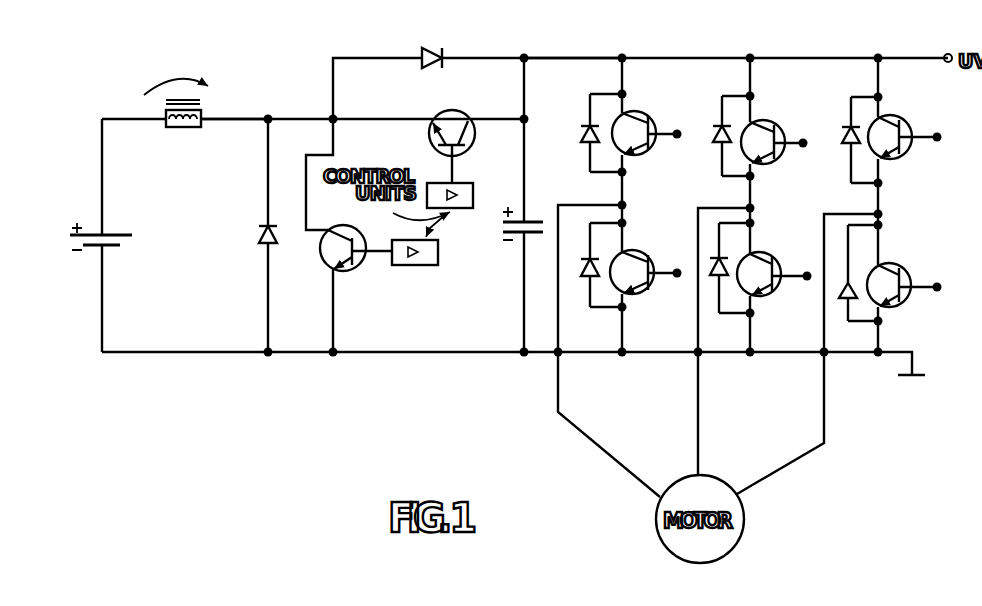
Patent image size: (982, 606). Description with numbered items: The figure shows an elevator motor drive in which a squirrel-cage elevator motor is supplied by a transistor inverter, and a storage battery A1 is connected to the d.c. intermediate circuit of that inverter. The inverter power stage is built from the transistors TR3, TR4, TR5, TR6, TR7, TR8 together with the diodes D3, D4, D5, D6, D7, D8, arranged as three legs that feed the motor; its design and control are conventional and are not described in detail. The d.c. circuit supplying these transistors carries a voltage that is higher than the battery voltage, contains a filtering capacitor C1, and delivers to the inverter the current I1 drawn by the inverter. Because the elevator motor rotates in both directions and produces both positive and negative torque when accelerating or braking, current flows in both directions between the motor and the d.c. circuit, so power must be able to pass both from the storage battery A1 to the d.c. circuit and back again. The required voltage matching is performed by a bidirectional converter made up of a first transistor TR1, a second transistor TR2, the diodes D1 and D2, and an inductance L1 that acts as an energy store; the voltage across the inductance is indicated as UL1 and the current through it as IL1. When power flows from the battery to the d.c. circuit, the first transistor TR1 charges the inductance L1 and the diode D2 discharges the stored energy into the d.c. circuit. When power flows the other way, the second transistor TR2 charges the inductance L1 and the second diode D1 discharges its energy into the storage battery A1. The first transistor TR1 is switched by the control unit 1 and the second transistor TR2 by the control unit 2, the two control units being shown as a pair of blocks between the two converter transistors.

The inductance L1 is at (183, 128).
The inductor voltage UL1 is at (176, 72).
The inductor current IL1 is at (234, 102).
The storage battery A1 is at (86, 235).
The second diode D1 is at (251, 235).
The diode D2 is at (427, 41).
The current drawn by the inverter I1 is at (573, 36).
The first transistor TR1 is at (356, 263).
The second transistor TR2 is at (422, 146).
The control unit 1 is at (475, 197).
The control unit 2 is at (438, 258).
The filtering capacitor C1 is at (509, 224).
The transistor TR3 is at (644, 131).
The transistor TR4 is at (643, 278).
The transistor TR5 is at (772, 133).
The transistor TR6 is at (772, 280).
The transistor TR7 is at (902, 136).
The transistor TR8 is at (902, 283).
The diode D3 is at (585, 133).
The diode D4 is at (599, 280).
The diode D5 is at (719, 124).
The diode D6 is at (727, 282).
The diode D7 is at (848, 128).
The diode D8 is at (855, 286).